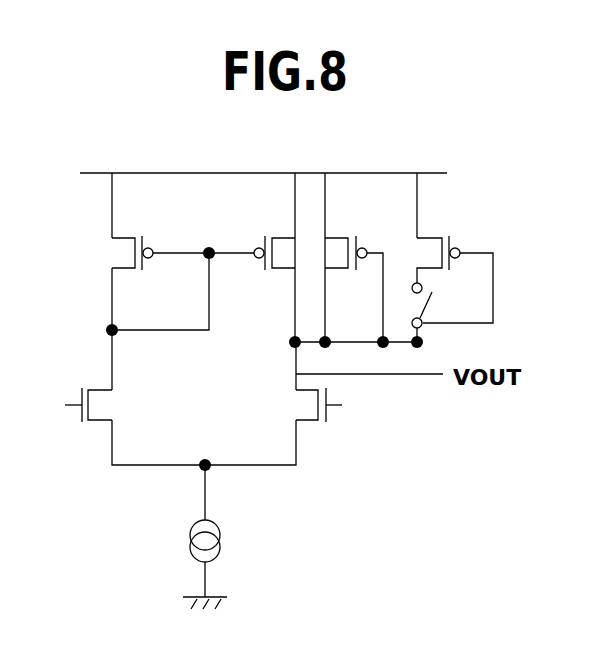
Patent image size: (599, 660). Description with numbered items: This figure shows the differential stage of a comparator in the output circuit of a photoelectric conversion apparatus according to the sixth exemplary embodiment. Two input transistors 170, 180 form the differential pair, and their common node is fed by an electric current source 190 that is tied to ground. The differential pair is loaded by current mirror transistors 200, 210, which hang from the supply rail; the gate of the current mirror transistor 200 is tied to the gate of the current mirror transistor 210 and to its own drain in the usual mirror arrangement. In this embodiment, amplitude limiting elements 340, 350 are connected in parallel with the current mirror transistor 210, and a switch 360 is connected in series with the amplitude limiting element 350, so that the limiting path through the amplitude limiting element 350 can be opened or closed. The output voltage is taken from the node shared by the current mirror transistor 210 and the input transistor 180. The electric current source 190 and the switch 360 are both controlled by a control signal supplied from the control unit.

The input transistor 170 is at (83, 423).
The input transistor 180 is at (326, 423).
The electric current source 190 is at (189, 551).
The current mirror transistor 200 is at (112, 254).
The current mirror transistor 210 is at (266, 237).
The amplitude limiting element 340 is at (355, 238).
The amplitude limiting element 350 is at (445, 238).
The switch 360 is at (432, 305).